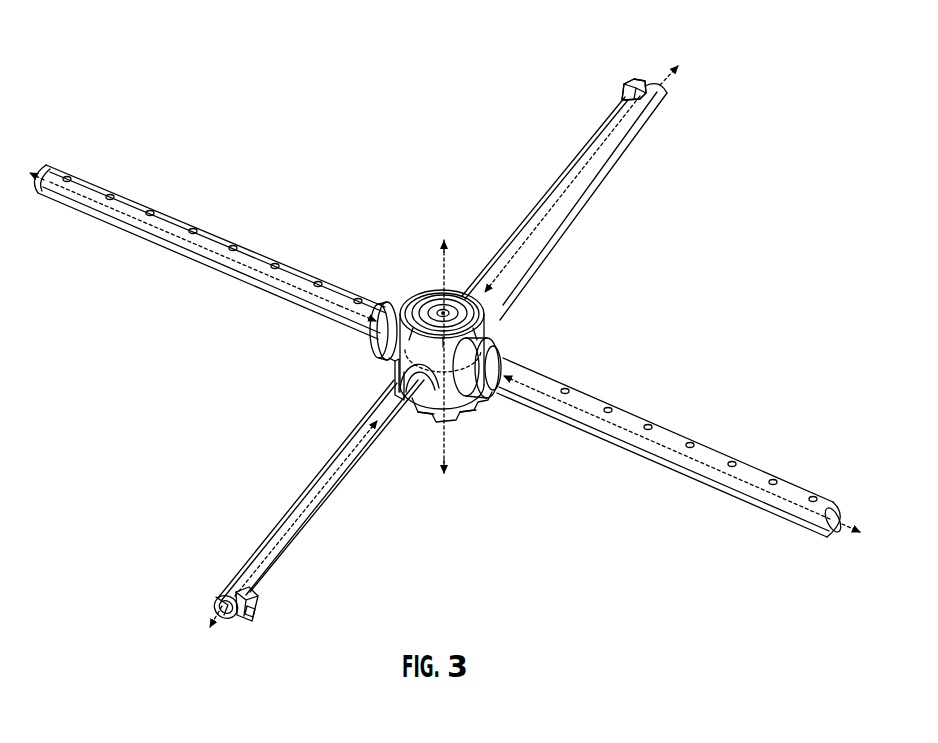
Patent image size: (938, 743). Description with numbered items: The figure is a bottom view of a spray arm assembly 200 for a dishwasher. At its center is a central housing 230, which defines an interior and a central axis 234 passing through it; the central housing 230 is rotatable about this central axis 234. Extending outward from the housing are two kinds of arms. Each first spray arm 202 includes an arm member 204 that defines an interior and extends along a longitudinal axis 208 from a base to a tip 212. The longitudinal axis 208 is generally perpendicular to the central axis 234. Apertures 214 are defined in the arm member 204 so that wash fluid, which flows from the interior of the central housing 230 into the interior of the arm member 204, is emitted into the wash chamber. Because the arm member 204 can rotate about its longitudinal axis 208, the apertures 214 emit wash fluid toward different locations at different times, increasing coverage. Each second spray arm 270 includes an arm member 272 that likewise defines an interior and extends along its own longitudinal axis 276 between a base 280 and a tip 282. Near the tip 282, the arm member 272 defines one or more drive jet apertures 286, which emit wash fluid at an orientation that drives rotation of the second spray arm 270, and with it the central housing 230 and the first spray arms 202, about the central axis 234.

The spray arm assembly 200 is at (335, 101).
The first spray arm 202 is at (233, 228).
The arm member 204 is at (173, 228).
The longitudinal axis 208 is at (131, 220).
The tip 212 is at (834, 511).
The apertures 214 is at (72, 176).
The central housing 230 is at (422, 282).
The central axis 234 is at (498, 340).
The second spray arm 270 is at (517, 198).
The arm member 272 is at (587, 172).
The longitudinal axis 276 is at (597, 192).
The base 280 is at (420, 404).
The tip 282 is at (215, 606).
The drive jet apertures 286 is at (612, 92).